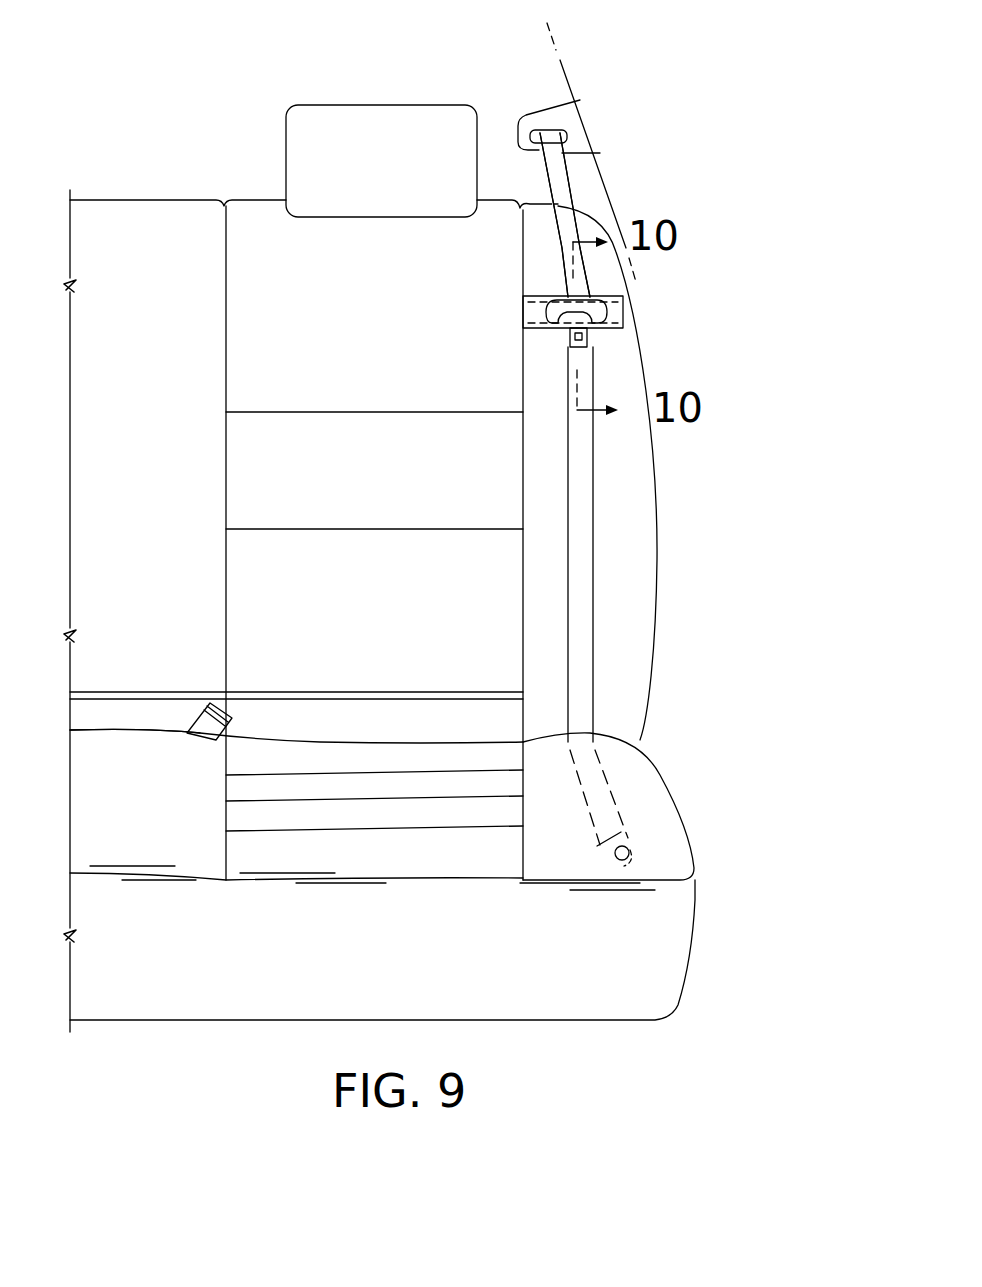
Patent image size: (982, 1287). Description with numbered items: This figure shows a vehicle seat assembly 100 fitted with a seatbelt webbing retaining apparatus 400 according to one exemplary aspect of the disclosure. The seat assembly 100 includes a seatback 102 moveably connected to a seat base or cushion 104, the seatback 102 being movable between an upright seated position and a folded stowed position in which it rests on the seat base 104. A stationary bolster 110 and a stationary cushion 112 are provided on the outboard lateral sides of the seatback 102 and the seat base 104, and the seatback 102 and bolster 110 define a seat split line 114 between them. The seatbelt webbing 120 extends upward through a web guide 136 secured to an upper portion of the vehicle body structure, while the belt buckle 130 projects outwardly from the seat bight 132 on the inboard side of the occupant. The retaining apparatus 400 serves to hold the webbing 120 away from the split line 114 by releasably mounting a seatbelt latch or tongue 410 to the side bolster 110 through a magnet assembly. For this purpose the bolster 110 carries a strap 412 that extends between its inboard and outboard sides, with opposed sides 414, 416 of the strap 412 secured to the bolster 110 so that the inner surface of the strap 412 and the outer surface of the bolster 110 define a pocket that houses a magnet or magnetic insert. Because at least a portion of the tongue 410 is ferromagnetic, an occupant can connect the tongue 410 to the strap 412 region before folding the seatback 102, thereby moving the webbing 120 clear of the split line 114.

The vehicle seat assembly 100 is at (760, 466).
The seatback 102 is at (248, 218).
The seat base or cushion 104 is at (360, 845).
The stationary bolster 110 is at (636, 632).
The stationary cushion 112 is at (655, 822).
The seat split line 114 is at (523, 607).
The seatbelt webbing 120 is at (600, 566).
The belt buckle 130 is at (200, 715).
The seat bight 132 is at (124, 730).
The web guide 136 is at (577, 118).
The seatbelt webbing retaining apparatus 400 is at (620, 338).
The seatbelt latch or tongue 410 is at (562, 337).
The strap 412 is at (617, 310).
The first opposed side of strap 414 is at (535, 297).
The second opposed side of strap 416 is at (535, 330).